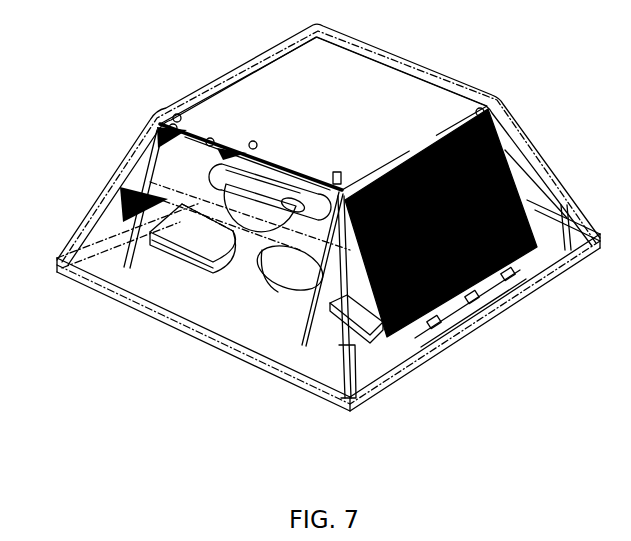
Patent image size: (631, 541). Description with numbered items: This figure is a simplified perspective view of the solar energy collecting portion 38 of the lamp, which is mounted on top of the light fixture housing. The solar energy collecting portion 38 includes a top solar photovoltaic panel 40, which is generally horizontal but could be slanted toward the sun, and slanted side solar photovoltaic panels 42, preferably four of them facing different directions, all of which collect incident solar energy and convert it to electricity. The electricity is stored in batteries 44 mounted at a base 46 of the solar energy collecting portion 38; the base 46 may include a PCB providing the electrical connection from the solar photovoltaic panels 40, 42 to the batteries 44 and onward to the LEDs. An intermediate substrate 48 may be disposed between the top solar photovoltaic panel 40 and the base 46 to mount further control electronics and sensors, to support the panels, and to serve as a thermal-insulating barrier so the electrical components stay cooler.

The solar energy collecting portion 38 is at (110, 120).
The top solar photovoltaic panel 40 is at (403, 104).
The side solar photovoltaic panel 42 is at (515, 176).
The battery 44 is at (180, 233).
The base 46 is at (235, 300).
The intermediate substrate 48 is at (175, 183).